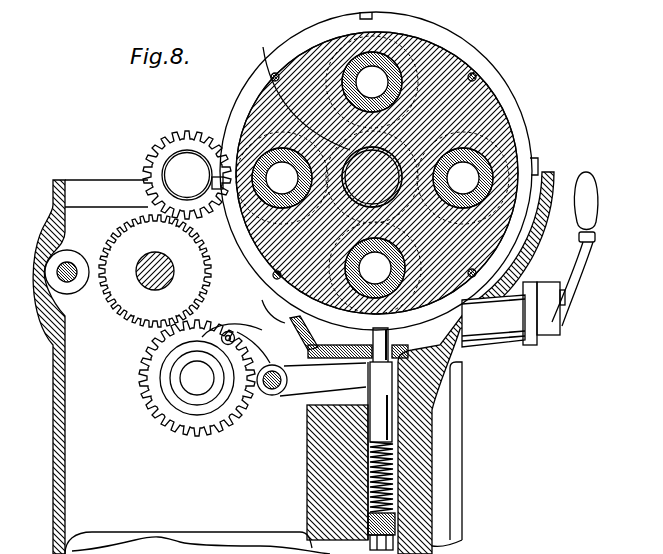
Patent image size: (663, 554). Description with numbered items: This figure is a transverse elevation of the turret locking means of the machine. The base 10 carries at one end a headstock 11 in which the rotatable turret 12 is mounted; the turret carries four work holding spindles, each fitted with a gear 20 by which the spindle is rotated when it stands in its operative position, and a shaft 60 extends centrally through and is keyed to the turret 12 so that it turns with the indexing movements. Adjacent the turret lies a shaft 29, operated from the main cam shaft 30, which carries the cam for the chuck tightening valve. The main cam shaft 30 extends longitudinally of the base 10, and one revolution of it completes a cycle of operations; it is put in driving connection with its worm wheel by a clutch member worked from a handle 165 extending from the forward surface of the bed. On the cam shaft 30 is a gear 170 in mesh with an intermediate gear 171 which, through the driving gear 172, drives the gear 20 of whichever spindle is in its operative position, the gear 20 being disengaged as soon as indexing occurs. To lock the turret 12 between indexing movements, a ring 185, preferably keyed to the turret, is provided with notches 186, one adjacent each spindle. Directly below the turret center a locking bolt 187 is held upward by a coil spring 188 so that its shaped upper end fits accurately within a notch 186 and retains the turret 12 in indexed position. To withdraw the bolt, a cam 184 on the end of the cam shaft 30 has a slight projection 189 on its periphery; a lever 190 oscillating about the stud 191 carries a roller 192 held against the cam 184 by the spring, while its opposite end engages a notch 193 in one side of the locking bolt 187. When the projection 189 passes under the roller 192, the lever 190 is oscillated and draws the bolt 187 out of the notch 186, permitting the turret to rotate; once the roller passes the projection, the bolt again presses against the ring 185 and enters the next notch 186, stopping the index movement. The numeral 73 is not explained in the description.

The base 10 is at (56, 497).
The headstock 11 is at (548, 215).
The turret 12 is at (490, 97).
The gear 20 is at (240, 126).
The shaft 29 is at (140, 283).
The main cam shaft 30 is at (186, 388).
The shaft 60 is at (263, 47).
The base 73 is at (201, 545).
The handle 165 is at (585, 250).
The gear 170 is at (185, 428).
The intermediate gear 171 is at (137, 318).
The driving gear 172 is at (180, 142).
The cam 184 is at (166, 382).
The ring 185 is at (520, 132).
The notches 186 is at (358, 15).
The locking bolt 187 is at (390, 428).
The coil spring 188 is at (393, 477).
The projection 189 is at (260, 331).
The lever 190 is at (302, 394).
The stud 191 is at (273, 376).
The roller 192 is at (235, 334).
The notch 193 is at (404, 352).